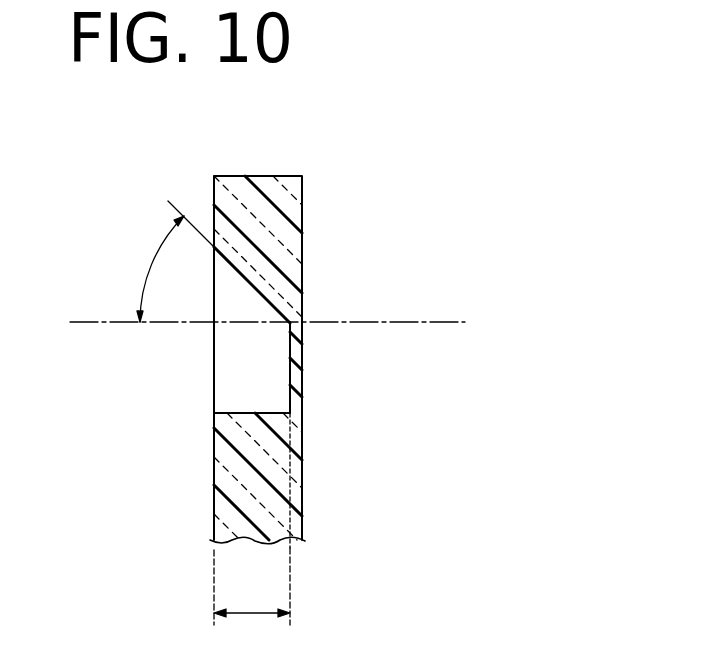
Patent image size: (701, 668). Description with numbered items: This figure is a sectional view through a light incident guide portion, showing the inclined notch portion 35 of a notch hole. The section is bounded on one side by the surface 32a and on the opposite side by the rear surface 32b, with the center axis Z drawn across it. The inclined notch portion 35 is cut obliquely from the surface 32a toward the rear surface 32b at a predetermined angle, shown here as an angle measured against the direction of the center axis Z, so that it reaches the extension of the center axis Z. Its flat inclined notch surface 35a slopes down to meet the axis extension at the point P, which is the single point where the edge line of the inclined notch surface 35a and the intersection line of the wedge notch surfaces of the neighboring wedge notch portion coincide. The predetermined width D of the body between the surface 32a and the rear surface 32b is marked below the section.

The inclined notch portion 35 is at (226, 291).
The inclined notch surface 35a is at (252, 296).
The point on the extension of the center axis P is at (292, 321).
The center axis Z is at (78, 321).
The surface 32a is at (212, 475).
The rear surface 32b is at (303, 470).
The predetermined width D is at (253, 611).